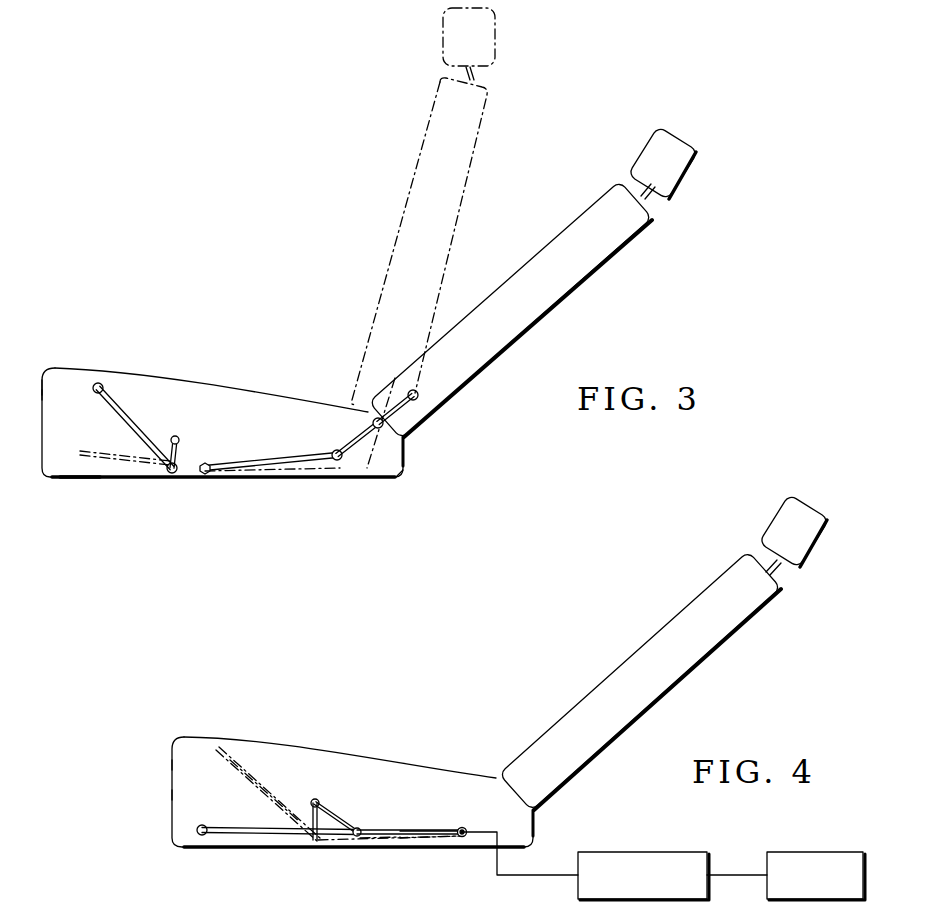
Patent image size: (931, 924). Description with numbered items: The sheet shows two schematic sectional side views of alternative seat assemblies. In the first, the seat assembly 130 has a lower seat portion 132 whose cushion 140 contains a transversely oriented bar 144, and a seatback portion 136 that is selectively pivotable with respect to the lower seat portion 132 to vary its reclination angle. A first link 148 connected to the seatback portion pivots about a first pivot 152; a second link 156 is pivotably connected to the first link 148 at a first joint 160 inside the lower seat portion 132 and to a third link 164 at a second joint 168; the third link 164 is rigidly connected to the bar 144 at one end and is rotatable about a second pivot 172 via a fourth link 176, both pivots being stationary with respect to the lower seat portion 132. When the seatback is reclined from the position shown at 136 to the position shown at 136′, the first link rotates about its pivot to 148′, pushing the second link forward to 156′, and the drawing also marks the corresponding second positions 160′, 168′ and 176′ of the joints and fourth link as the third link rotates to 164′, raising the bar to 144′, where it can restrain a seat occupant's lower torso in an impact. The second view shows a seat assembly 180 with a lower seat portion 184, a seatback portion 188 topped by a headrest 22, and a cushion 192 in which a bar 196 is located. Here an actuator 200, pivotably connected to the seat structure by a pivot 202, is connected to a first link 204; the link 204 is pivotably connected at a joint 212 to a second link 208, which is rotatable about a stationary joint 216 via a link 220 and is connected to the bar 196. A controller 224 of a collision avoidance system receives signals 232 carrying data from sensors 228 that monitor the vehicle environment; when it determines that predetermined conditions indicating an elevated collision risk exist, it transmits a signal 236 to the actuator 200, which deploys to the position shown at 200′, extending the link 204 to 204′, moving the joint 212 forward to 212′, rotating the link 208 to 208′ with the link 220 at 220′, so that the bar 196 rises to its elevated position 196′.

In FIG. 3, the seat assembly 130 is at (268, 165).
In FIG. 3, the lower seat portion 132 is at (60, 366).
In FIG. 3, the seatback portion 136 is at (470, 173).
In FIG. 3, the seatback portion second position 136′ is at (550, 308).
In FIG. 3, the cushion 140 is at (80, 392).
In FIG. 3, the bar 144 is at (78, 482).
In FIG. 3, the bar second position 144′ is at (102, 386).
In FIG. 3, the first link 148 is at (392, 383).
In FIG. 3, the first link second position 148′ is at (423, 407).
In FIG. 3, the first pivot 152 is at (403, 437).
In FIG. 3, the second link 156 is at (282, 481).
In FIG. 3, the second link second position 156′ is at (313, 452).
In FIG. 3, the first joint 160 is at (402, 483).
In FIG. 3, the rear link (alternate position) 160′ is at (348, 462).
In FIG. 3, the third link 164 is at (138, 481).
In FIG. 3, the third link second position 164′ is at (141, 430).
In FIG. 3, the second joint 168 is at (207, 478).
In FIG. 3, the lower pivot (alternate position) 168′ is at (172, 478).
In FIG. 3, the second pivot 172 is at (181, 436).
In FIG. 3, the fourth link 176 is at (182, 457).
In FIG. 3, the actuator link (alternate position) 176′ is at (165, 441).
In FIG. 4, the seat assembly 180 is at (553, 625).
In FIG. 4, the lower seat portion 184 is at (173, 738).
In FIG. 4, the seatback portion 188 is at (695, 595).
In FIG. 4, the cushion 192 is at (170, 780).
In FIG. 4, the bar 196 is at (202, 840).
In FIG. 4, the bar elevated position 196′ is at (205, 740).
In FIG. 4, the actuator 200 is at (420, 830).
In FIG. 4, the rear bar (alternate position) 200′ is at (410, 847).
In FIG. 4, the pivot 202 is at (465, 845).
In FIG. 4, the first link 204 is at (390, 830).
In FIG. 4, the first link extended position 204′ is at (355, 847).
In FIG. 4, the second link 208 is at (240, 848).
In FIG. 4, the second link rotated position 208′ is at (255, 800).
In FIG. 4, the joint 212 is at (363, 829).
In FIG. 4, the joint forward position 212′ is at (312, 847).
In FIG. 4, the joint 216 is at (315, 800).
In FIG. 4, the link 220 is at (350, 830).
In FIG. 4, the actuator link (alternate position) 220′ is at (300, 800).
In FIG. 4, the headrest 22 is at (773, 508).
In FIG. 4, the controller 224 is at (637, 852).
In FIG. 4, the sensors 228 is at (800, 852).
In FIG. 4, the signals 232 is at (742, 873).
In FIG. 4, the signal 236 is at (556, 873).